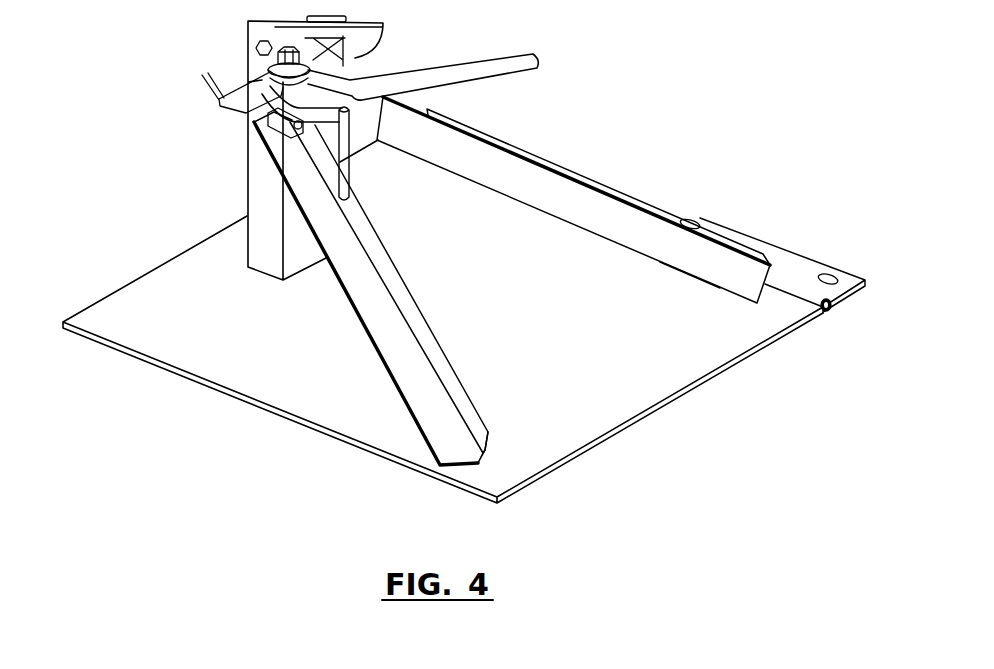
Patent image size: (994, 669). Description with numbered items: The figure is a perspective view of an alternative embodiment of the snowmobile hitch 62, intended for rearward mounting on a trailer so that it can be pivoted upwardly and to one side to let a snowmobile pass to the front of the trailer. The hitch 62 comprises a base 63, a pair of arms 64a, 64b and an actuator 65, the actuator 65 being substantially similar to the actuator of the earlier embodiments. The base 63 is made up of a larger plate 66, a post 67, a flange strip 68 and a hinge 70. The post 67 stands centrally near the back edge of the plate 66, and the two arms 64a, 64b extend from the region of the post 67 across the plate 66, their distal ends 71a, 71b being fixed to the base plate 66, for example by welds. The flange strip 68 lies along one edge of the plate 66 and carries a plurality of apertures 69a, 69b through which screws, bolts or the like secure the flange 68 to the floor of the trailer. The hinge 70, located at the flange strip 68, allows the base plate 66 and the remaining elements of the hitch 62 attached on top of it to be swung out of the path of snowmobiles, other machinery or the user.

The snowmobile hitch 62 is at (469, 251).
The base 63 is at (439, 259).
The arm 64a is at (573, 220).
The arm 64b is at (441, 296).
The actuator 65 is at (441, 38).
The plate 66 is at (245, 375).
The post 67 is at (257, 187).
The flange strip 68 is at (781, 264).
The aperture 69a is at (830, 277).
The aperture 69b is at (699, 221).
The hinge 70 is at (834, 313).
The distal end 71a is at (679, 291).
The distal end 71b is at (509, 459).